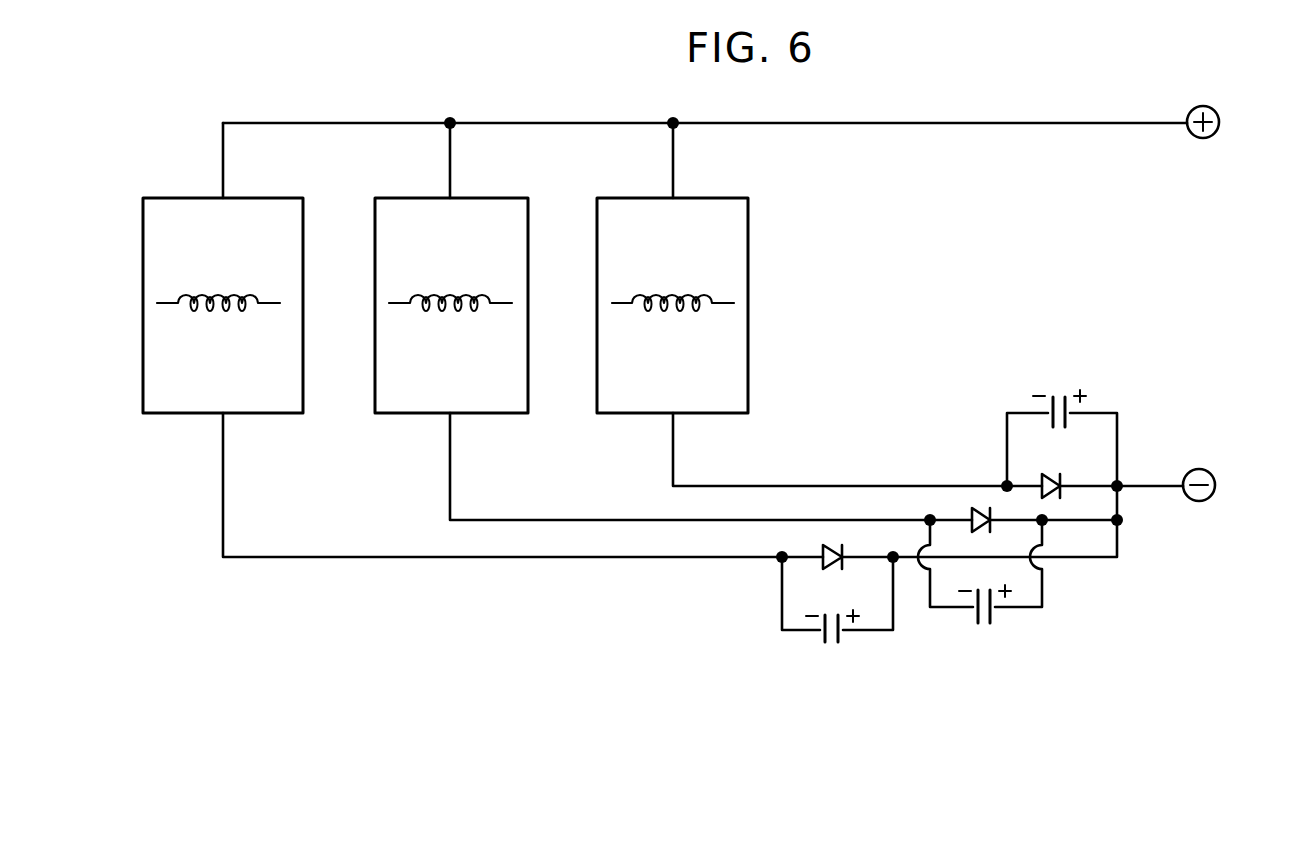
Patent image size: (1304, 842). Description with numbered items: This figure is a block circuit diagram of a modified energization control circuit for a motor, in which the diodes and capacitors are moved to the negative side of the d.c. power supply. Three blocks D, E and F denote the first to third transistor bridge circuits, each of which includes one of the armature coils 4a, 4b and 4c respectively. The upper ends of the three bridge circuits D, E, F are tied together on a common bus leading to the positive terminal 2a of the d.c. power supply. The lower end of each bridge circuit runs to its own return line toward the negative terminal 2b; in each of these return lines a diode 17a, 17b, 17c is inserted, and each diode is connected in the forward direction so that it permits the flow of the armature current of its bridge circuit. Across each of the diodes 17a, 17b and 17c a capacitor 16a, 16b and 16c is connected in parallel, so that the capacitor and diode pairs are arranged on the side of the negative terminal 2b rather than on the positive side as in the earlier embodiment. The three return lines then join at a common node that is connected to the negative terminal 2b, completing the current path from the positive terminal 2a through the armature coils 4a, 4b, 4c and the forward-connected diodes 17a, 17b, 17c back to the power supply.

The positive terminal 2a is at (1212, 137).
The negative terminal 2b is at (1207, 500).
The first transistor bridge circuit D is at (158, 197).
The second transistor bridge circuit E is at (393, 197).
The third transistor bridge circuit F is at (616, 197).
The armature coil 4a is at (224, 308).
The armature coil 4b is at (456, 308).
The armature coil 4c is at (668, 308).
The capacitor 16a is at (830, 643).
The capacitor 16b is at (982, 624).
The capacitor 16c is at (1062, 395).
The diode 17a is at (830, 547).
The diode 17b is at (978, 512).
The diode 17c is at (1052, 478).